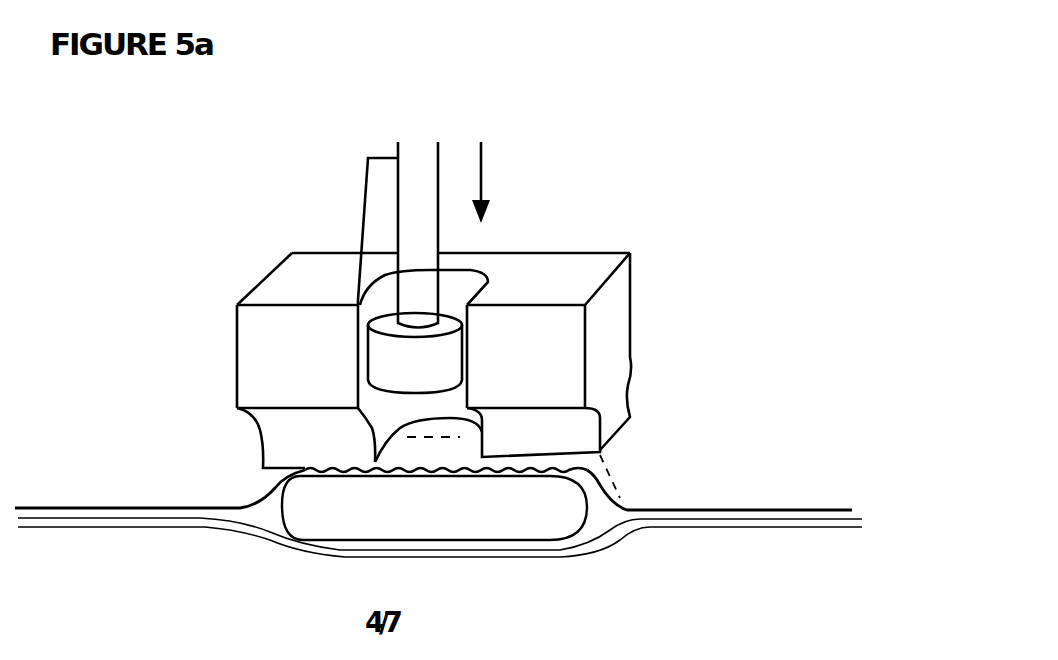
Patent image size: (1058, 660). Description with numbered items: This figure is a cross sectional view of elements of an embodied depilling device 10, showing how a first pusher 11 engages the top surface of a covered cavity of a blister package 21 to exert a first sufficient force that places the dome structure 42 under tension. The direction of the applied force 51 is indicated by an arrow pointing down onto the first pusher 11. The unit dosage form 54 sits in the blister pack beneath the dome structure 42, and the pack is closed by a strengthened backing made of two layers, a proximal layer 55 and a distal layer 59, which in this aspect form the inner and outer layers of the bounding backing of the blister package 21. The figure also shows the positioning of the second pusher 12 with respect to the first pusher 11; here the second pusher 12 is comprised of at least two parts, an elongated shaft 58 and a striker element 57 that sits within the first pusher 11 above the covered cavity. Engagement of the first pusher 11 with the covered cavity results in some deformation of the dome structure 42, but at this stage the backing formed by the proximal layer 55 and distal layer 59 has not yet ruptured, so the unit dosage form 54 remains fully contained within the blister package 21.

The depilling device 10 is at (654, 174).
The first pusher 11 is at (434, 375).
The second pusher 12 is at (365, 206).
The blister package 21 is at (145, 493).
The dome structure 42 is at (366, 461).
The direction of applied force 51 is at (503, 182).
The unit dosage form 54 is at (434, 508).
The proximal layer 55 is at (685, 518).
The striker element 57 is at (356, 353).
The elongated shaft 58 is at (418, 235).
The distal layer 59 is at (785, 527).